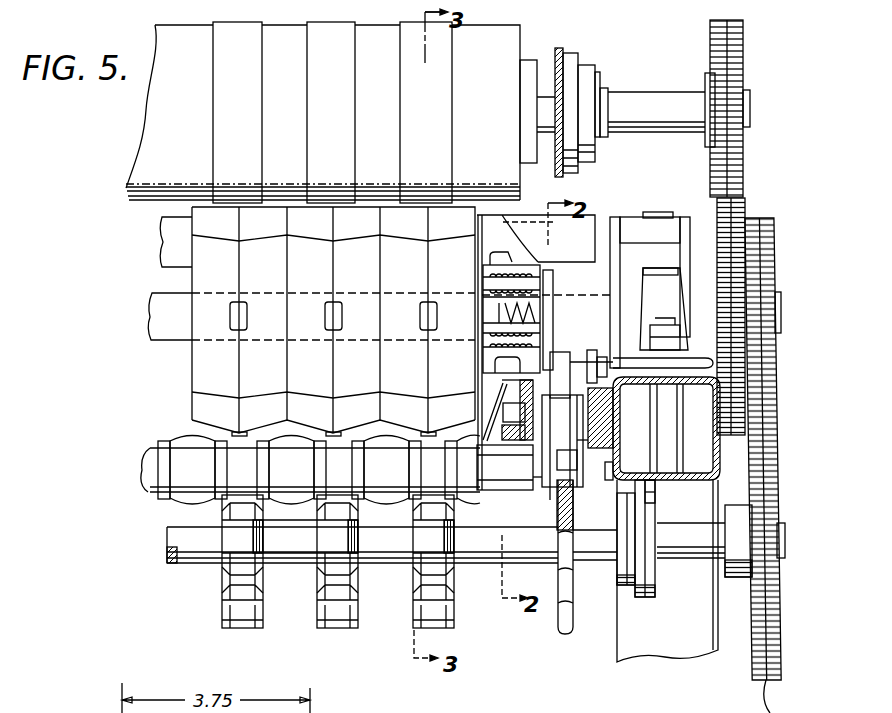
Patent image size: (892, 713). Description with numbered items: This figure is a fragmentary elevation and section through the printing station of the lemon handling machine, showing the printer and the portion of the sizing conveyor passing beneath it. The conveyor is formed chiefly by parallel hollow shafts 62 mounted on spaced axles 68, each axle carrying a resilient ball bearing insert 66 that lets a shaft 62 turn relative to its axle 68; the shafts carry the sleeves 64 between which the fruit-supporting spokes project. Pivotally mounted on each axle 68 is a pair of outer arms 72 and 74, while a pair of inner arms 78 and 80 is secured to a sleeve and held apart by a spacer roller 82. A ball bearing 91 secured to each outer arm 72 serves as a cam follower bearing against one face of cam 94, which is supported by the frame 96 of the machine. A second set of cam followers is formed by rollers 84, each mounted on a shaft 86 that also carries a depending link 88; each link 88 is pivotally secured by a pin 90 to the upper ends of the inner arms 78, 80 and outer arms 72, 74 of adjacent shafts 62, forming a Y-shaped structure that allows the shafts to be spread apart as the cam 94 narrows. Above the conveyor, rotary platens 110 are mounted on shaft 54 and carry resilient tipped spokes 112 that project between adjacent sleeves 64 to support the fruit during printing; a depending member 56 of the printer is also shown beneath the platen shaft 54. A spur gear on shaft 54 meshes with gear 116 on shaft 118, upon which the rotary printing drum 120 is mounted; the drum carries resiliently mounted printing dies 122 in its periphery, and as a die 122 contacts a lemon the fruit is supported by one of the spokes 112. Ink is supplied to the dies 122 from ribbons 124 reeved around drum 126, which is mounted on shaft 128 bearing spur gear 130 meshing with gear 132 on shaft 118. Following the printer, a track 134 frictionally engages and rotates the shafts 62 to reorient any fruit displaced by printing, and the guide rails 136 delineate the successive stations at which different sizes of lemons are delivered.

The drum 126 is at (152, 128).
The ribbons 124 is at (323, 128).
The shaft 128 is at (638, 98).
The spur gear 130 is at (745, 72).
The gear 132 is at (726, 208).
The shaft 118 is at (780, 300).
The gear 116 is at (760, 369).
The rotary printing drum 120 is at (182, 392).
The printing dies 122 is at (238, 430).
The hollow shafts 62 is at (148, 463).
The feed rollers 64 is at (176, 502).
The resilient tipped spokes 112 is at (228, 617).
The rotary platens 110 is at (265, 585).
The shaft 54 is at (479, 545).
The connecting rod 56 is at (568, 634).
The ball bearing insert 66 is at (537, 478).
The outer arm 74 is at (551, 488).
The spacer roller 82 is at (557, 502).
The inner arm 80 is at (550, 448).
The track 134 is at (518, 446).
The pin 90 is at (538, 412).
The outer arm 72 is at (573, 474).
The axles 68 is at (650, 483).
The ball bearing 91 is at (645, 501).
The guide rails 136 is at (610, 406).
The inner arm 78 is at (577, 437).
The cam 94 is at (580, 448).
The link 88 is at (558, 356).
The rollers 84 is at (593, 352).
The shaft 86 is at (582, 365).
The frame 96 is at (671, 571).